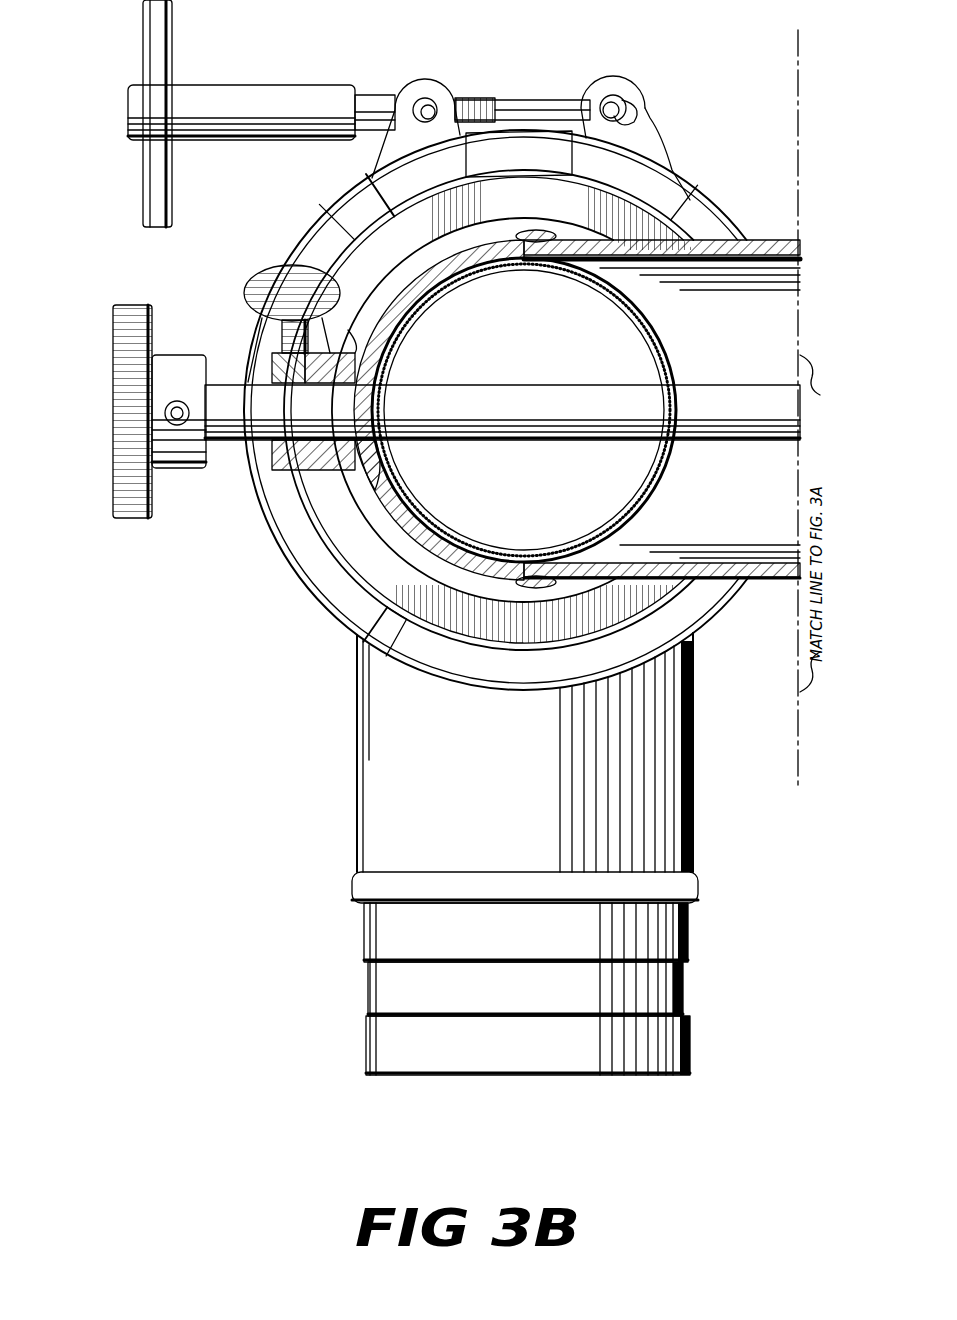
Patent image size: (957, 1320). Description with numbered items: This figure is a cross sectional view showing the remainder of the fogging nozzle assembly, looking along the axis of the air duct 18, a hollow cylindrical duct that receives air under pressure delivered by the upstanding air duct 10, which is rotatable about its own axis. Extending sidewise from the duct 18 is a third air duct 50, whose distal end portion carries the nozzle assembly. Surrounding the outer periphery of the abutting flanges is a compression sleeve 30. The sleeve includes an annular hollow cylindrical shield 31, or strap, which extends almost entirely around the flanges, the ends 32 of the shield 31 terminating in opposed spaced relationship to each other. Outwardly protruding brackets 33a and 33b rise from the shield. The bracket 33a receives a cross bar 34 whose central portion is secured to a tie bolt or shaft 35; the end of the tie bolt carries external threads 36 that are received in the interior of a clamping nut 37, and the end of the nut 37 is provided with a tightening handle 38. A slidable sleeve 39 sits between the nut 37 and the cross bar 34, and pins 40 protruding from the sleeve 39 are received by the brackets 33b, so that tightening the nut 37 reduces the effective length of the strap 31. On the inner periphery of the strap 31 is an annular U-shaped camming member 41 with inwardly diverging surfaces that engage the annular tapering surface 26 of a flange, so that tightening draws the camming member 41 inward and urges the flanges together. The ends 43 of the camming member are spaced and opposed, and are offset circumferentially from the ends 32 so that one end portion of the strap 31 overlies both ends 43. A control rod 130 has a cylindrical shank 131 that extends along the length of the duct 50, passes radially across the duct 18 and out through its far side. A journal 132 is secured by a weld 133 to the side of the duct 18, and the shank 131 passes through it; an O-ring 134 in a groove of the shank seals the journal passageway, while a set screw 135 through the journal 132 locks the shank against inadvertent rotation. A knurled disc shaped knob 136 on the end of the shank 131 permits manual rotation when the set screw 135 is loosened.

The air duct 10 is at (357, 798).
The air duct 18 is at (396, 505).
The annular tapering surface 26 is at (358, 640).
The compression sleeve 30 is at (733, 210).
The shield 31 is at (702, 205).
The ends of the shield 32 is at (503, 131).
The bracket 33a is at (662, 106).
The bracket 33b is at (420, 80).
The cross bar 34 is at (616, 100).
The tie bolt 35 is at (553, 102).
The threads 36 is at (482, 104).
The clamping nut 37 is at (265, 90).
The tightening handle 38 is at (170, 52).
The slidable sleeve 39 is at (370, 97).
The pins 40 is at (433, 105).
The camming member 41 is at (632, 165).
The ends of the camming member 43 is at (396, 204).
The air duct 50 is at (700, 562).
The control rod 130 is at (630, 380).
The shank 131 is at (545, 384).
The journal 132 is at (284, 468).
The weld 133 is at (372, 485).
The O-ring 134 is at (318, 470).
The set screw 135 is at (265, 283).
The knob 136 is at (113, 408).